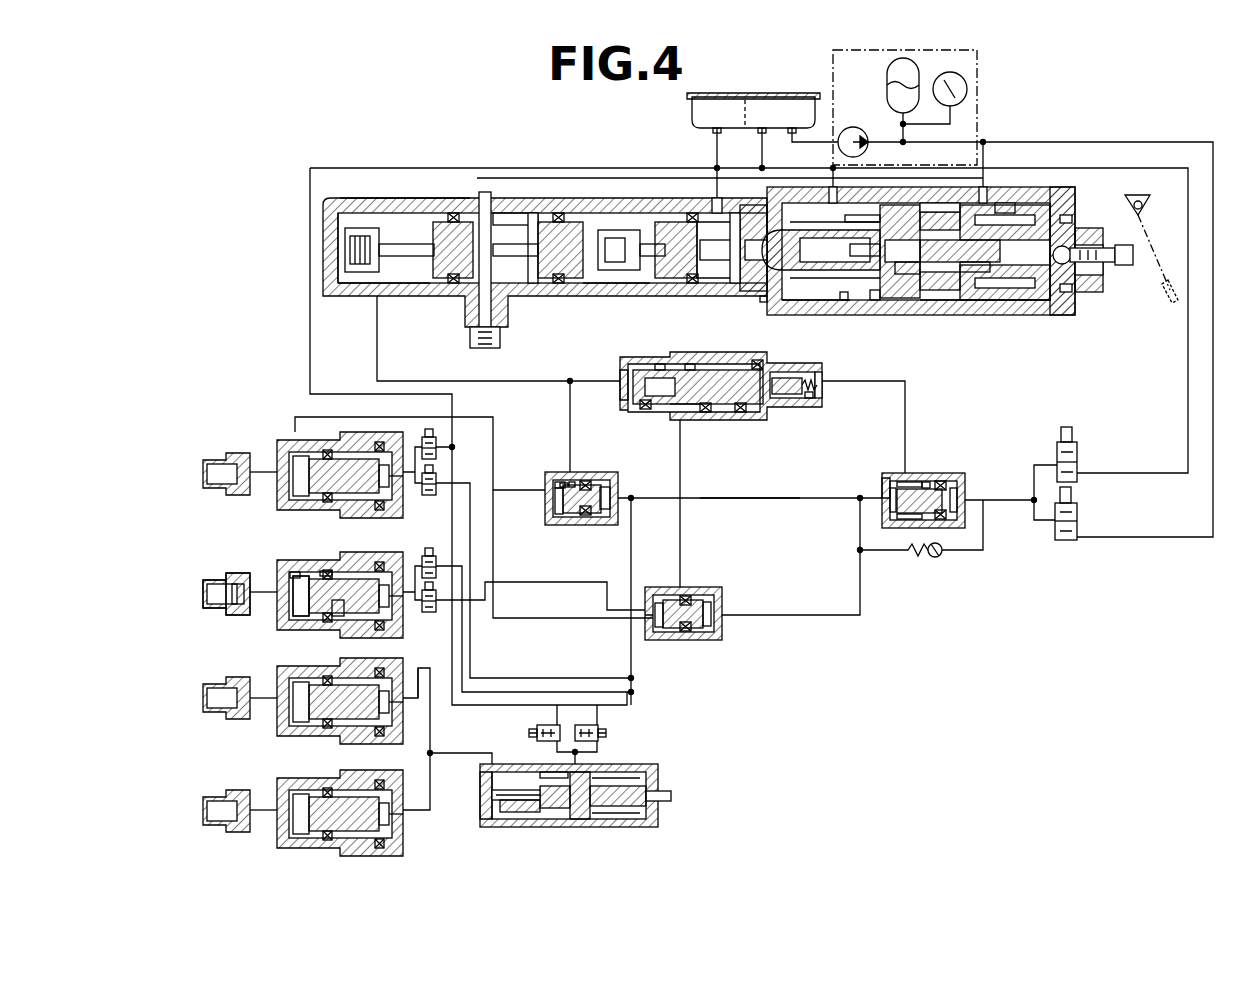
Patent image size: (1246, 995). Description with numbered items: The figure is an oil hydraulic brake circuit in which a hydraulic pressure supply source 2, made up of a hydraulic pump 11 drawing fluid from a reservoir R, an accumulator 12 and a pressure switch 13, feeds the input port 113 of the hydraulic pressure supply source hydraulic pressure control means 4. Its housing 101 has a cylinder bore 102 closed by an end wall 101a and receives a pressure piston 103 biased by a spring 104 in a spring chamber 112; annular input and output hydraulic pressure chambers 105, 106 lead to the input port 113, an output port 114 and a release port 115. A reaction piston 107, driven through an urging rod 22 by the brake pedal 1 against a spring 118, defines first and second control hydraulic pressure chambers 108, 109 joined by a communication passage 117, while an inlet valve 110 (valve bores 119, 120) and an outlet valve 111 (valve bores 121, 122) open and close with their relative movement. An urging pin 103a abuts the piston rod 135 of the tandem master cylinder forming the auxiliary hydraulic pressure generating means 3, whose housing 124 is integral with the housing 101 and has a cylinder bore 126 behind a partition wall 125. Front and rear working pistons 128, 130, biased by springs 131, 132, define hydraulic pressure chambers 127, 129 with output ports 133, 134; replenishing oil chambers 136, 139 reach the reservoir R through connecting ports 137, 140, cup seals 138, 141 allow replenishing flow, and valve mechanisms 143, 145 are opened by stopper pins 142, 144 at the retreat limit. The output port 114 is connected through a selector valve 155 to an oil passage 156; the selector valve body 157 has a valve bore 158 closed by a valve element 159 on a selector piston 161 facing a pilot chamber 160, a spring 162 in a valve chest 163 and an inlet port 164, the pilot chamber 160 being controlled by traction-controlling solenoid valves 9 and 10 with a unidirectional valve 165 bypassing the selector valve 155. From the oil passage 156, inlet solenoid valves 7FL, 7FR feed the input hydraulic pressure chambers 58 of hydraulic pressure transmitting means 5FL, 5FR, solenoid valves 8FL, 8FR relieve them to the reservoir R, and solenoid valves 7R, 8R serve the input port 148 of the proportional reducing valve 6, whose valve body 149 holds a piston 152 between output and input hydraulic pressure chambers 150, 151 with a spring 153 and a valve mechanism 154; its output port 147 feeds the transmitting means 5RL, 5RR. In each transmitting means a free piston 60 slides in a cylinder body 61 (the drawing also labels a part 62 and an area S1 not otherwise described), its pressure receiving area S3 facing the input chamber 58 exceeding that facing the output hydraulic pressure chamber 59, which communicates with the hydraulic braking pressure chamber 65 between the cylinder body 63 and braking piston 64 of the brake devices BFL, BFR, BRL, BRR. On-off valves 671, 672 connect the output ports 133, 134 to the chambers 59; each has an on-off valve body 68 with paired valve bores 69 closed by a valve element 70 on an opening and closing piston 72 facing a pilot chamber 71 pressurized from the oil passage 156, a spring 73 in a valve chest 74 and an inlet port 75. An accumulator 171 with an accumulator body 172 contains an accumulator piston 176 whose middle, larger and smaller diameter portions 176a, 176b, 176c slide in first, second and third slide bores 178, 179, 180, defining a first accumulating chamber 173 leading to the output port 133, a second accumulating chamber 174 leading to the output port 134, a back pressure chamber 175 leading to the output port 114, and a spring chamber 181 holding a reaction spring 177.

The reservoir R is at (692, 112).
The brake pedal 1 is at (1165, 300).
The hydraulic pressure supply source 2 is at (978, 112).
The auxiliary hydraulic pressure generating means 3 is at (569, 298).
The hydraulic pressure supply source hydraulic pressure control means 4 is at (975, 316).
The proportional reducing valve 6 is at (640, 762).
The traction-controlling normally-opened solenoid valve 9 is at (1077, 460).
The traction-controlling normally-opened solenoid valve 10 is at (1077, 515).
The hydraulic pump 11 is at (852, 127).
The accumulator 12 is at (887, 74).
The pressure switch 13 is at (958, 86).
The urging rod 22 is at (1125, 264).
The input hydraulic pressure chamber 58 is at (421, 673).
The output hydraulic pressure chamber 59 is at (290, 615).
The free piston 60 is at (335, 617).
The cylinder body 61 is at (325, 572).
The port 62 is at (295, 572).
The cylinder body 63 is at (232, 573).
The braking piston 64 is at (207, 573).
The hydraulic braking pressure chamber 65 is at (237, 604).
The on-off valve 671 is at (612, 470).
The on-off valve 672 is at (718, 582).
The on-off valve body 68 is at (590, 525).
The valve bore 69 is at (553, 515).
The valve element 70 is at (552, 486).
The pilot chamber 71 is at (616, 490).
The opening and closing piston 72 is at (562, 517).
The spring 73 is at (560, 480).
The valve chest 74 is at (560, 478).
The inlet port 75 is at (582, 480).
The housing 101 is at (1045, 316).
The end wall 101a is at (1068, 203).
The cylinder bore 102 is at (875, 300).
The pressure piston 103 is at (900, 300).
The urging pin 103a is at (835, 291).
The spring 104 is at (815, 300).
The input hydraulic pressure chamber 105 is at (1015, 300).
The output hydraulic pressure chamber 106 is at (948, 324).
The reaction piston 107 is at (1065, 316).
The first control hydraulic pressure chamber 108 is at (835, 220).
The second control hydraulic pressure chamber 109 is at (1005, 222).
The inlet valve 110 is at (1000, 187).
The outlet valve 111 is at (952, 272).
The spring chamber 112 is at (845, 300).
The input port 113 is at (998, 174).
The output port 114 is at (925, 300).
The release port 115 is at (830, 176).
The communication passage 117 is at (1005, 284).
The spring 118 is at (850, 252).
The valve bore 119 is at (944, 220).
The valve bore 120 is at (981, 283).
The valve bore 121 is at (865, 220).
The valve bore 122 is at (881, 255).
The housing 124 is at (402, 198).
The partition wall 125 is at (767, 300).
The cylinder bore 126 is at (545, 284).
The hydraulic pressure chamber 127 is at (366, 250).
The front working piston 128 is at (575, 213).
The hydraulic pressure chamber 129 is at (630, 250).
The rear working piston 130 is at (700, 284).
The spring 131 is at (345, 296).
The spring 132 is at (690, 213).
The output port 133 is at (372, 296).
The output port 134 is at (605, 284).
The piston rod 135 is at (757, 245).
The replenishing oil chamber 136 is at (512, 213).
The connecting port 137 is at (480, 200).
The cup seal 138 is at (450, 284).
The replenishing oil chamber 139 is at (735, 284).
The connecting port 140 is at (717, 170).
The cup seal 141 is at (672, 284).
The stopper pin 142 is at (492, 250).
The valve mechanism 143 is at (410, 284).
The stopper pin 144 is at (821, 250).
The valve mechanism 145 is at (660, 222).
The output port 147 is at (492, 778).
The input port 148 is at (580, 772).
The valve body 149 is at (560, 820).
The output hydraulic pressure chamber 150 is at (492, 812).
The input hydraulic pressure chamber 151 is at (620, 815).
The piston 152 is at (552, 772).
The spring 153 is at (652, 780).
The valve mechanism 154 is at (508, 819).
The selector valve 155 is at (950, 470).
The oil passage 156 is at (775, 492).
The selector valve body 157 is at (882, 476).
The valve bore 158 is at (882, 508).
The valve element 159 is at (888, 517).
The pilot chamber 160 is at (965, 492).
The selector piston 161 is at (940, 480).
The spring 162 is at (930, 481).
The valve chest 163 is at (882, 490).
The inlet port 164 is at (905, 473).
The unidirectional valve 165 is at (935, 557).
The accumulator 171 is at (730, 420).
The accumulator body 172 is at (822, 378).
The first accumulating chamber 173 is at (620, 370).
The second accumulating chamber 174 is at (672, 418).
The back pressure chamber 175 is at (818, 392).
The accumulator piston 176 is at (698, 387).
The middle diameter portion 176a is at (660, 364).
The larger diameter portion 176b is at (690, 364).
The smaller diameter portion 176c is at (775, 404).
The reaction spring 177 is at (708, 412).
The first slide bore 178 is at (648, 410).
The second slide bore 179 is at (742, 412).
The third slide bore 180 is at (808, 400).
The spring chamber 181 is at (762, 358).
The hydraulic pressure transmitting means 5FR is at (292, 432).
The hydraulic pressure transmitting means 5FL is at (277, 555).
The hydraulic pressure transmitting means 5RL is at (277, 670).
The hydraulic pressure transmitting means 5RR is at (277, 782).
The right front wheel brake device BFR is at (203, 460).
The left front wheel brake device BFL is at (203, 610).
The left rear wheel brake device BRL is at (203, 684).
The right rear wheel brake device BRR is at (203, 795).
The inlet solenoid valve 7FR is at (436, 484).
The inlet solenoid valve 7FL is at (430, 616).
The inlet solenoid valve 7R is at (598, 728).
The inlet solenoid valve 8FR is at (436, 448).
The inlet solenoid valve 8FL is at (430, 548).
The inlet solenoid valve 8R is at (530, 728).
The chamber S1 is at (309, 588).
The pressure receiving area S3 is at (358, 588).